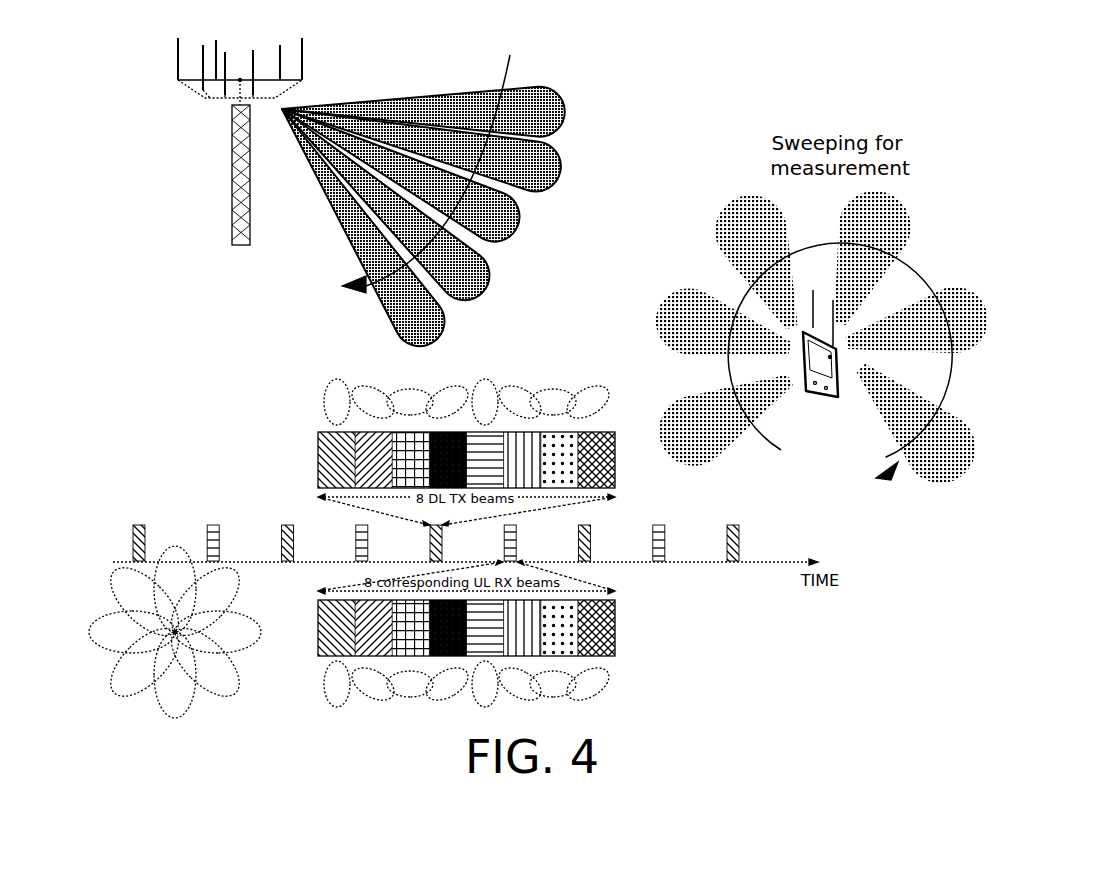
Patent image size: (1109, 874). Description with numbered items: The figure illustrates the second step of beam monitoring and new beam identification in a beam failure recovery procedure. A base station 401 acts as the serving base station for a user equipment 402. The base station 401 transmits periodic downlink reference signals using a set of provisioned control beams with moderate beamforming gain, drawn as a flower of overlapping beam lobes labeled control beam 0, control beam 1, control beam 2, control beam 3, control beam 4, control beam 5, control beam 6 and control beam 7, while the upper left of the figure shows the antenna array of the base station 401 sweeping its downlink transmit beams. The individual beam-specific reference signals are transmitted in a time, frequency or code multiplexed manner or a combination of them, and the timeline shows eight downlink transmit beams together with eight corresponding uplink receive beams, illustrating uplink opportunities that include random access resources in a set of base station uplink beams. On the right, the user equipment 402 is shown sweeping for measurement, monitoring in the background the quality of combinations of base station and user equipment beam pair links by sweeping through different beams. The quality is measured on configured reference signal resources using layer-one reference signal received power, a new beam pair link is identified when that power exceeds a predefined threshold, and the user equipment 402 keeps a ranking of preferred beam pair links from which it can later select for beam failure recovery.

The base station 401 is at (245, 42).
The user equipment 402 is at (825, 294).
The control beam CB0 0 is at (175, 578).
The control beam CB1 1 is at (209, 598).
The control beam CB2 2 is at (229, 632).
The control beam CB3 3 is at (209, 666).
The control beam CB4 4 is at (175, 686).
The control beam CB5 5 is at (141, 666).
The control beam CB6 6 is at (121, 632).
The control beam CB7 7 is at (141, 598).